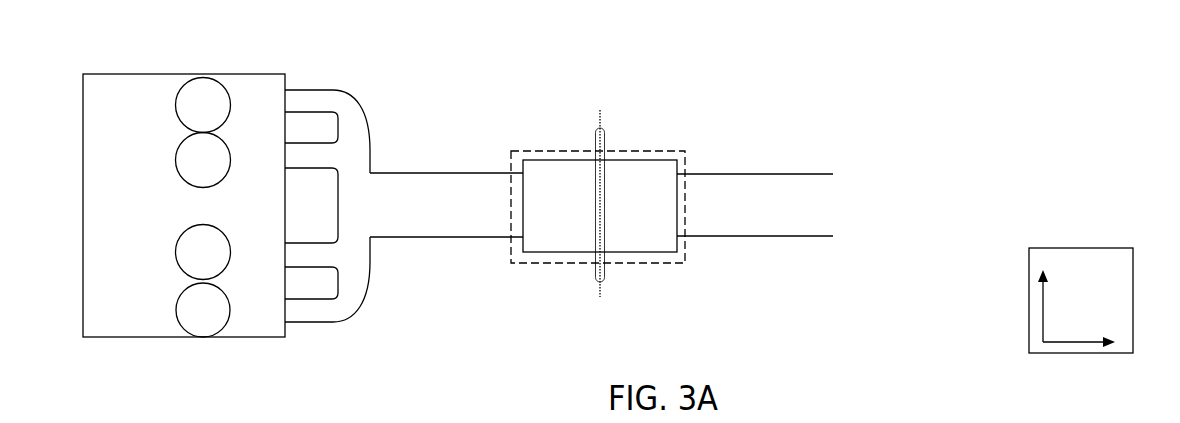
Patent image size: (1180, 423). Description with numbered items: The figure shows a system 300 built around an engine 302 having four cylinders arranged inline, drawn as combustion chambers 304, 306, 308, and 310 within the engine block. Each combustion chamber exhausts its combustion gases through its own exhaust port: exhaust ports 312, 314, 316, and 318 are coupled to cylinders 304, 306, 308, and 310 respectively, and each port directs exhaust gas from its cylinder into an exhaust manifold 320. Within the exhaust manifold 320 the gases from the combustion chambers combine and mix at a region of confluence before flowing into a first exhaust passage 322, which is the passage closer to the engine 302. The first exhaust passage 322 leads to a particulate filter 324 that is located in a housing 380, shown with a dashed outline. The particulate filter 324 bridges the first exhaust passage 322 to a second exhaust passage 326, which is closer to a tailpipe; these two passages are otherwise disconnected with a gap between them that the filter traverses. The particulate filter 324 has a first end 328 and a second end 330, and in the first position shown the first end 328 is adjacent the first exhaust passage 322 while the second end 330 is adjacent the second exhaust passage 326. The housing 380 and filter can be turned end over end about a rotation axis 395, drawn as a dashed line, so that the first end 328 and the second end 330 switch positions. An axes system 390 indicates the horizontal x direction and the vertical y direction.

The system 300 is at (829, 39).
The engine 302 is at (108, 74).
The combustion chamber 304 is at (203, 105).
The combustion chamber 306 is at (203, 160).
The combustion chamber 308 is at (203, 252).
The combustion chamber 310 is at (203, 310).
The exhaust port 312 is at (312, 88).
The exhaust port 314 is at (292, 170).
The exhaust port 316 is at (298, 242).
The exhaust port 318 is at (308, 323).
The exhaust manifold 320 is at (406, 284).
The first exhaust passage 322 is at (446, 205).
The particulate filter 324 is at (600, 206).
The second exhaust passage 326 is at (755, 205).
The first end 328 is at (524, 205).
The second end 330 is at (676, 205).
The housing 380 is at (652, 151).
The axes system 390 is at (1108, 248).
The rotation axis 395 is at (601, 290).